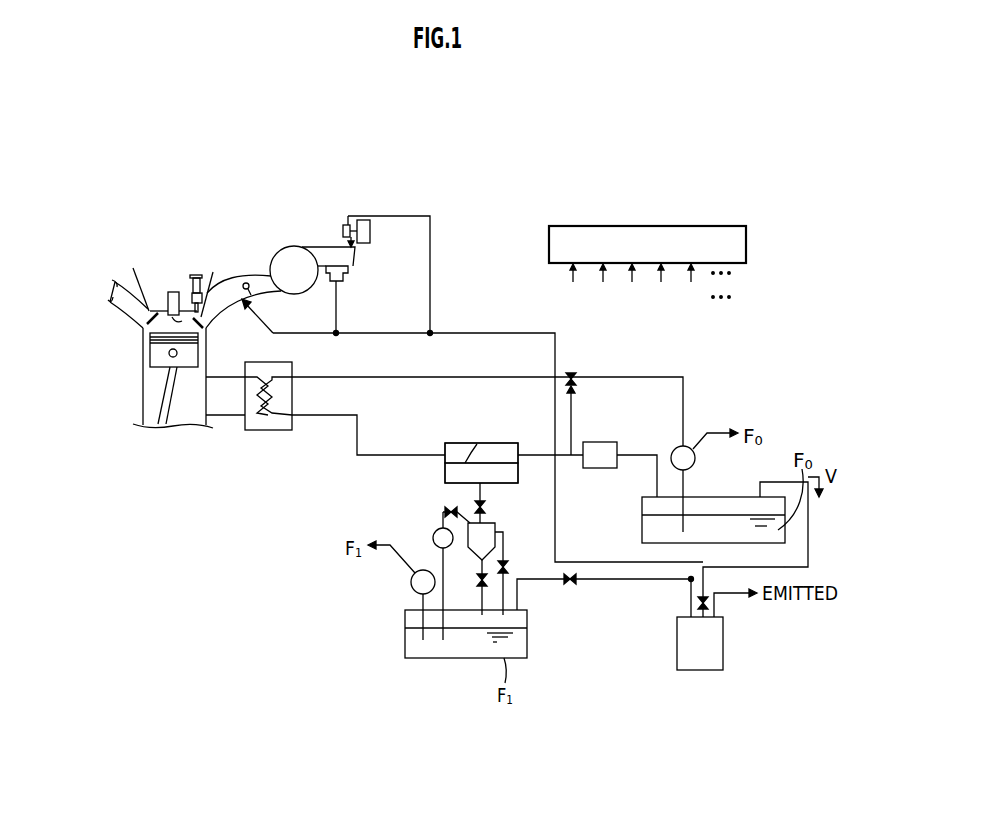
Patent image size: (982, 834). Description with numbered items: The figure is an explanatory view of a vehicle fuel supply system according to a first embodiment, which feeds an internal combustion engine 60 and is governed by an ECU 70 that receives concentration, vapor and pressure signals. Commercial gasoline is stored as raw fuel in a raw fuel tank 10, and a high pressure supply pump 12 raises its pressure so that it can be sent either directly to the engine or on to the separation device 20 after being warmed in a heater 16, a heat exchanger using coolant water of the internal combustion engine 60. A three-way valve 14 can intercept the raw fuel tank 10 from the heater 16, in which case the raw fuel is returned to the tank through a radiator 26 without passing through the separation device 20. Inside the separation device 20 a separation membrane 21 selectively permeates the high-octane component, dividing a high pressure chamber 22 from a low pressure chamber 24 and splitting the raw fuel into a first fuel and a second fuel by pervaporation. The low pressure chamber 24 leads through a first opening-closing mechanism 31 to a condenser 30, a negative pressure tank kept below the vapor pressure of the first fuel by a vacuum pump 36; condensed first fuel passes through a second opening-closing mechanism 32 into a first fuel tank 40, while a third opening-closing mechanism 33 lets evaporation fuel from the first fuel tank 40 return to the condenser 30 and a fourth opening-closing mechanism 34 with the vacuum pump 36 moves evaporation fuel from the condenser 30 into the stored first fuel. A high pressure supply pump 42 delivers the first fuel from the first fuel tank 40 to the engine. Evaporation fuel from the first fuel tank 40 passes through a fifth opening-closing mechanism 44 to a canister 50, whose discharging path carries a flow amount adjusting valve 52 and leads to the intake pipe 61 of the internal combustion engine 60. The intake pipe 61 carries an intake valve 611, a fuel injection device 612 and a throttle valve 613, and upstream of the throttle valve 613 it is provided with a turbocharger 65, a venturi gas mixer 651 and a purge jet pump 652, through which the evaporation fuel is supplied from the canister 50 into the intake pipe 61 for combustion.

The raw fuel tank 10 is at (708, 497).
The high pressure supply pump 12 is at (696, 459).
The three-way valve 14 is at (572, 372).
The heater 16 is at (267, 432).
The separation device 20 is at (449, 443).
The separation membrane 21 is at (474, 446).
The high pressure chamber 22 is at (505, 442).
The low pressure chamber 24 is at (444, 473).
The radiator 26 is at (598, 441).
The condenser 30 is at (496, 525).
The first opening-closing mechanism 31 is at (478, 508).
The second opening-closing mechanism 32 is at (478, 584).
The third opening-closing mechanism 33 is at (507, 565).
The fourth opening-closing mechanism 34 is at (445, 511).
The vacuum pump 36 is at (433, 538).
The first fuel tank 40 is at (431, 660).
The high pressure supply pump 42 is at (411, 582).
The fifth opening-closing mechanism 44 is at (571, 586).
The canister 50 is at (707, 672).
The flow amount adjusting valve 52 is at (705, 597).
The internal combustion engine 60 is at (108, 258).
The intake pipe 61 is at (222, 313).
The intake valve 611 is at (213, 272).
The fuel injection device 612 is at (188, 284).
The throttle valve 613 is at (249, 283).
The turbocharger 65 is at (293, 252).
The venturi gas mixer 651 is at (349, 278).
The purge jet pump 652 is at (371, 242).
The ECU 70 is at (712, 226).